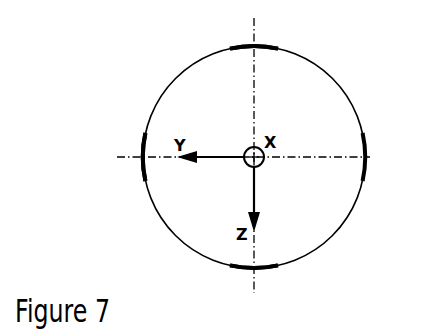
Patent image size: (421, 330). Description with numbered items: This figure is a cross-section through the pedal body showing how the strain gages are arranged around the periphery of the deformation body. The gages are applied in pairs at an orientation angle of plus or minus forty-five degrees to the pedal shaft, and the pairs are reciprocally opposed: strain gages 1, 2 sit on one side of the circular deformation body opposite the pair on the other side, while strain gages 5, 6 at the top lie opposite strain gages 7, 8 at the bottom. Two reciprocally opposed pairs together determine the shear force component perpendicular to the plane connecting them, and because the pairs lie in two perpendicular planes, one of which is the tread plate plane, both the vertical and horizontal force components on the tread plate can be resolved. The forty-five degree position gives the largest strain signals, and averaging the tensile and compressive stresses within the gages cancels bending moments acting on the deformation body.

The strain gage 1 is at (122, 152).
The strain gage 2 is at (130, 152).
The strain gage 5 is at (256, 35).
The strain gage 6 is at (263, 35).
The strain gage 7 is at (244, 280).
The strain gage 8 is at (252, 280).